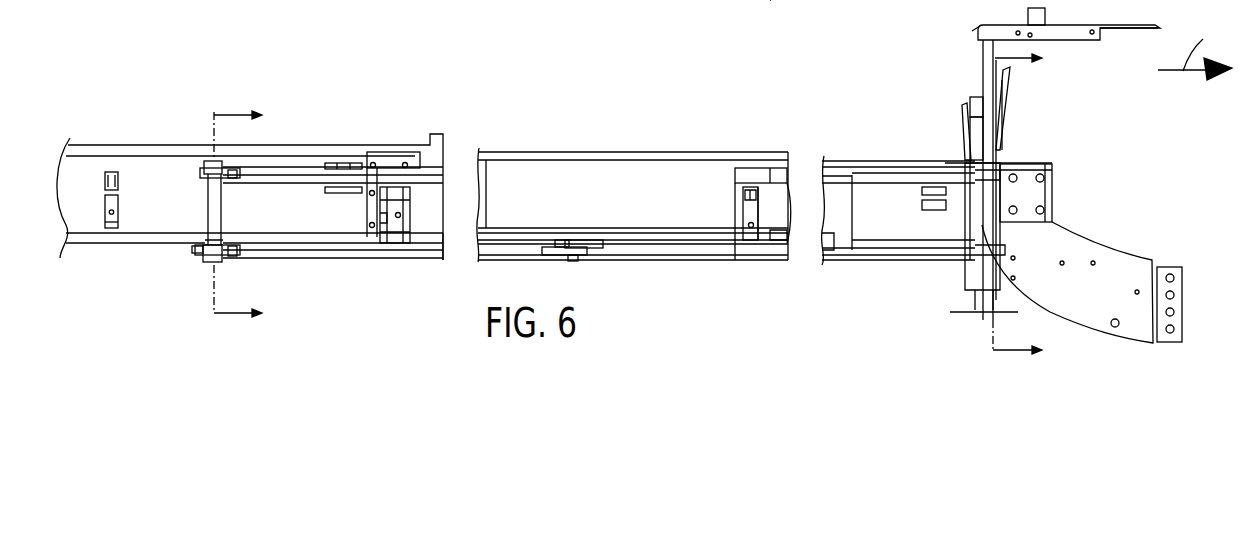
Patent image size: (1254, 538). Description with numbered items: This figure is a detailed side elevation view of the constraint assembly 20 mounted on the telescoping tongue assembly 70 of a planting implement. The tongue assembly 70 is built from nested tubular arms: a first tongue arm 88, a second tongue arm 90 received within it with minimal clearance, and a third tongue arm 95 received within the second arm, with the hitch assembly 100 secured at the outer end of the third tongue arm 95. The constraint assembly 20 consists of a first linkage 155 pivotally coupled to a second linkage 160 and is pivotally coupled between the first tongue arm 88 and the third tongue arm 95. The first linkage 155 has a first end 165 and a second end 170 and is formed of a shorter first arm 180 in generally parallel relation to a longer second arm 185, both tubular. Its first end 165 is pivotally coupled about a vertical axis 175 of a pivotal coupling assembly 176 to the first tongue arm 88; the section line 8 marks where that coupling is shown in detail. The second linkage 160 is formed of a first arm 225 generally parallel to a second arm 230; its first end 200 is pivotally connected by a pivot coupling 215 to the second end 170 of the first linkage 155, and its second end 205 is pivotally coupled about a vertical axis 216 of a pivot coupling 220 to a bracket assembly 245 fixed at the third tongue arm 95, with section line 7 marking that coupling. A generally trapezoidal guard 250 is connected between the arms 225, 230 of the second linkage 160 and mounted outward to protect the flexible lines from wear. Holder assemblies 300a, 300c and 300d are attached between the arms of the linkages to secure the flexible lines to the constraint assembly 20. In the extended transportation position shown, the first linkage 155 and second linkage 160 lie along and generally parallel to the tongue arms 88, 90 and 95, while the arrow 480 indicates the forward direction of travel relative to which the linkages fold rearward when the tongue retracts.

The constraint assembly 20 is at (357, 283).
The telescoping tongue assembly 70 is at (768, 325).
The first tongue arm 88 is at (387, 148).
The second tongue arm 90 is at (693, 153).
The third tongue arm 95 is at (837, 160).
The hitch assembly 100 is at (1167, 248).
The first linkage 155 is at (306, 160).
The second linkage 160 is at (876, 154).
The first end of the first linkage 165 is at (240, 153).
The second end of the first linkage 170 is at (547, 272).
The vertical axis 175 is at (214, 275).
The pivotal coupling assembly 176 is at (195, 258).
The first arm 180 is at (275, 163).
The second arm 185 is at (305, 257).
The first end of the second linkage 200 is at (635, 275).
The second end of the second linkage 205 is at (957, 272).
The pivot coupling 215 is at (578, 226).
The vertical axis 216 is at (993, 318).
The pivot coupling 220 is at (1016, 242).
The first arm 225 is at (900, 185).
The second arm 230 is at (887, 260).
The bracket assembly 245 is at (1025, 157).
The guard 250 is at (835, 228).
The holder assembly 300a is at (398, 262).
The holder assembly 300c is at (740, 264).
The holder assembly 300d is at (780, 0).
The arrow 480 is at (1198, 46).
The section line 7 is at (1028, 205).
The section line 8 is at (249, 215).